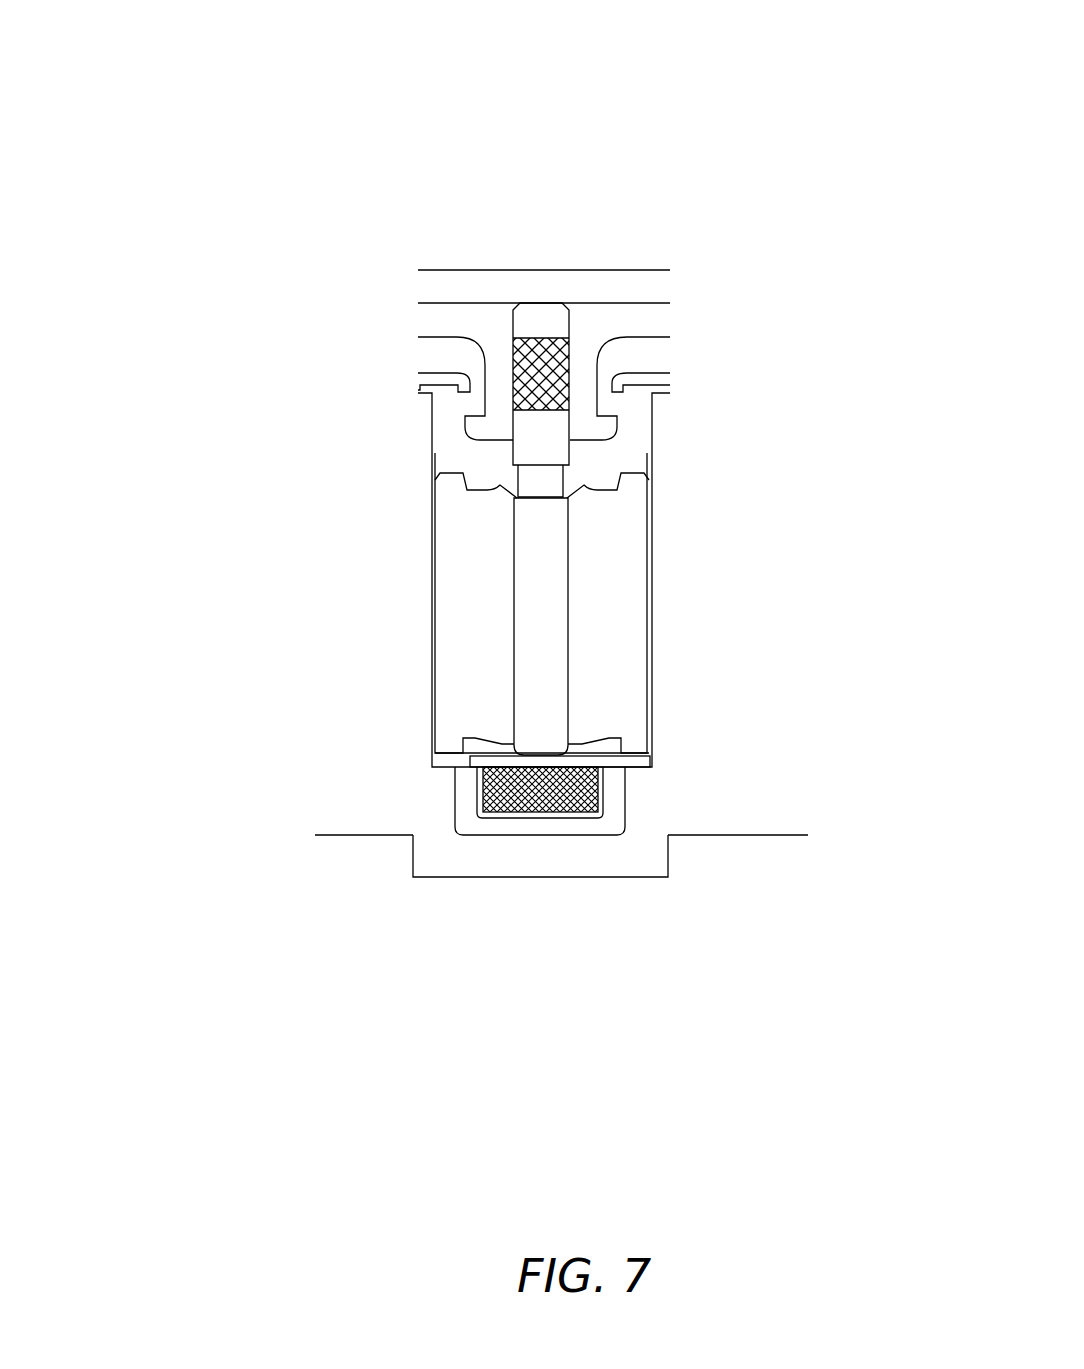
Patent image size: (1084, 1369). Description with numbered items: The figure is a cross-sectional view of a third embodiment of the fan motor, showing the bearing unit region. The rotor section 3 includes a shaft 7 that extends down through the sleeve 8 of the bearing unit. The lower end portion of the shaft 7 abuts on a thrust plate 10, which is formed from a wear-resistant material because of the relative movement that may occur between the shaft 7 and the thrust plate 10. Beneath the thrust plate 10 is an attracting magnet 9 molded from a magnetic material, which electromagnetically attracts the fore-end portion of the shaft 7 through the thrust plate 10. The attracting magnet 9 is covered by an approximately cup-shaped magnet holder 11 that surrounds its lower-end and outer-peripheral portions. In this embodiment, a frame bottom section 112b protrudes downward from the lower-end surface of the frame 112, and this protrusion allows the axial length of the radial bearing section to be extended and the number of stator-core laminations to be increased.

The rotor section 3 is at (483, 284).
The shaft 7 is at (543, 632).
The sleeve 8 is at (477, 572).
The attracting magnet 9 is at (533, 787).
The thrust plate 10 is at (482, 762).
The magnet holder 11 is at (613, 782).
The frame 112 is at (413, 808).
The frame bottom section 112b is at (457, 860).